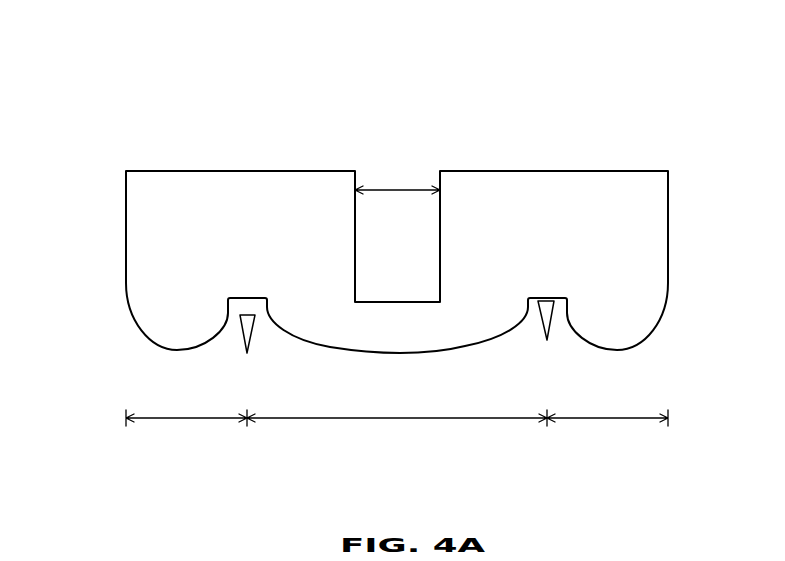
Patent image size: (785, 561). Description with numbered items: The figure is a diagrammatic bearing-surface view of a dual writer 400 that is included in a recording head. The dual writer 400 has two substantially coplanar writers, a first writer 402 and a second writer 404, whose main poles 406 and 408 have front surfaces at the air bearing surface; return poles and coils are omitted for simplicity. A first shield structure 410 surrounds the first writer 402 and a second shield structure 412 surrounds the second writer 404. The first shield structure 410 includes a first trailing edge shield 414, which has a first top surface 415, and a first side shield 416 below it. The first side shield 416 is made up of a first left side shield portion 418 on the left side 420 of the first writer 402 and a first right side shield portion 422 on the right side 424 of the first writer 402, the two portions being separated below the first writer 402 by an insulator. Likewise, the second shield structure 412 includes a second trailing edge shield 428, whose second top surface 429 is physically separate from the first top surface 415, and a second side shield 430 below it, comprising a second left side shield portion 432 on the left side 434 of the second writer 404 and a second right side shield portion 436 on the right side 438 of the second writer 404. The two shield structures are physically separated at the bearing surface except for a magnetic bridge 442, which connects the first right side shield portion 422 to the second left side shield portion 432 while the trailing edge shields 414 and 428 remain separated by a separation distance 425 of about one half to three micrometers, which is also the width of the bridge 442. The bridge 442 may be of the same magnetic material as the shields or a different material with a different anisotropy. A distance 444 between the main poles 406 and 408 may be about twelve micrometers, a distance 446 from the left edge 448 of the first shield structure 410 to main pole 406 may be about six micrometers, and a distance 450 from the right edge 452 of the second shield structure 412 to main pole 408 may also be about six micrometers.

The dual writer 400 is at (421, 85).
The first writer 402 is at (248, 368).
The second writer 404 is at (548, 356).
The main pole 406 is at (258, 327).
The main pole 408 is at (542, 318).
The first shield structure 410 is at (89, 225).
The second shield structure 412 is at (686, 225).
The first trailing edge shield 414 is at (173, 190).
The first top surface 415 is at (247, 171).
The first side shield 416 is at (96, 319).
The first left side shield portion 418 is at (162, 332).
The left side 420 is at (240, 329).
The first right side shield portion 422 is at (318, 323).
The right side 424 is at (255, 326).
The separation distance 425 is at (375, 190).
The second trailing edge shield 428 is at (607, 186).
The second top surface 429 is at (520, 171).
The second side shield 430 is at (687, 312).
The second left side shield portion 432 is at (470, 323).
The left side 434 is at (538, 312).
The second right side shield portion 436 is at (643, 330).
The right side 438 is at (549, 317).
The magnetic bridge 442 is at (373, 313).
The distance 444 is at (432, 420).
The distance 446 is at (190, 420).
The left edge 448 is at (126, 284).
The distance 450 is at (602, 420).
The right edge 452 is at (668, 283).